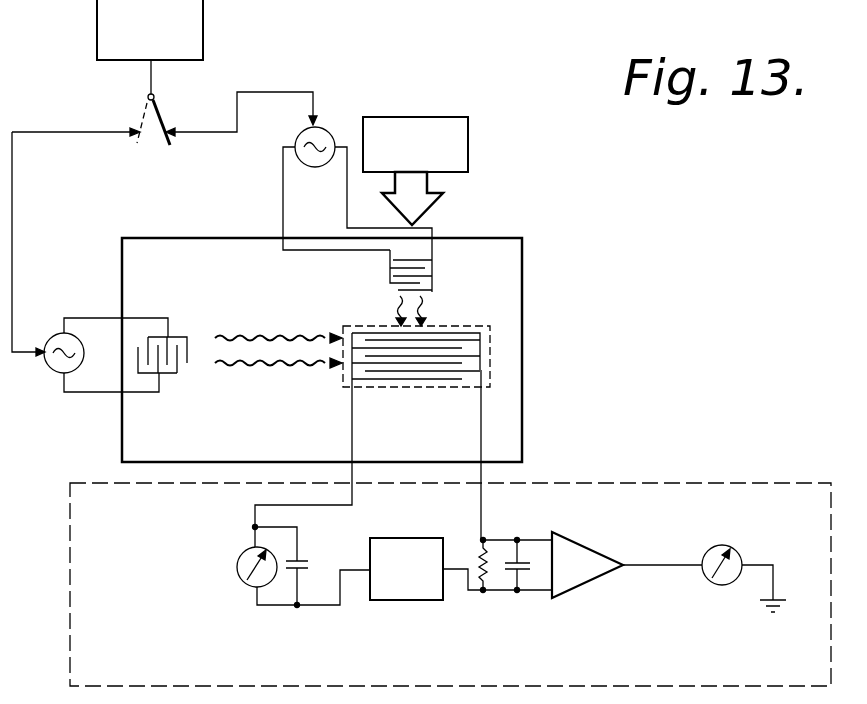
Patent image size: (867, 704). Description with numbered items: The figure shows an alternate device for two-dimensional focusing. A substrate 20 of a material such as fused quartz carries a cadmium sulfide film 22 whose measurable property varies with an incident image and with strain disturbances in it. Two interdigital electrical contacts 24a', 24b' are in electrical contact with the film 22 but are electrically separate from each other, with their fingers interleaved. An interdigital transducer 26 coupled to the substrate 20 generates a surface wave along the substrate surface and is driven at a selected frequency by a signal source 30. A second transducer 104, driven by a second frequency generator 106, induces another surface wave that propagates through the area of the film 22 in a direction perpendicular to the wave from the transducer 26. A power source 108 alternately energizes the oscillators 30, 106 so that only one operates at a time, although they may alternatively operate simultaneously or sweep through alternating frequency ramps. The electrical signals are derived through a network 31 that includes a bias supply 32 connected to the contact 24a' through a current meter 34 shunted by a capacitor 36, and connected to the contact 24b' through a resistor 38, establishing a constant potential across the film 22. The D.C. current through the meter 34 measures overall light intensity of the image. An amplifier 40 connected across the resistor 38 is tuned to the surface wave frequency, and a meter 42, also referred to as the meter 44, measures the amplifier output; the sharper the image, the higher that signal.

The power source 108 is at (205, 36).
The second frequency generator 106 is at (328, 124).
The meter 44 is at (470, 142).
The substrate 20 is at (510, 282).
The second transducer 104 is at (425, 248).
The interdigital transducer 26 is at (183, 337).
The signal source 30 is at (50, 374).
The film 22 is at (492, 352).
The interdigital electrical contact 24a' is at (338, 466).
The interdigital electrical contact 24b' is at (539, 455).
The network 31 is at (772, 482).
The current meter 34 is at (240, 578).
The capacitor 36 is at (311, 562).
The bias supply 32 is at (377, 602).
The resistor 38 is at (483, 570).
The amplifier 40 is at (570, 583).
The meter 42 is at (717, 585).